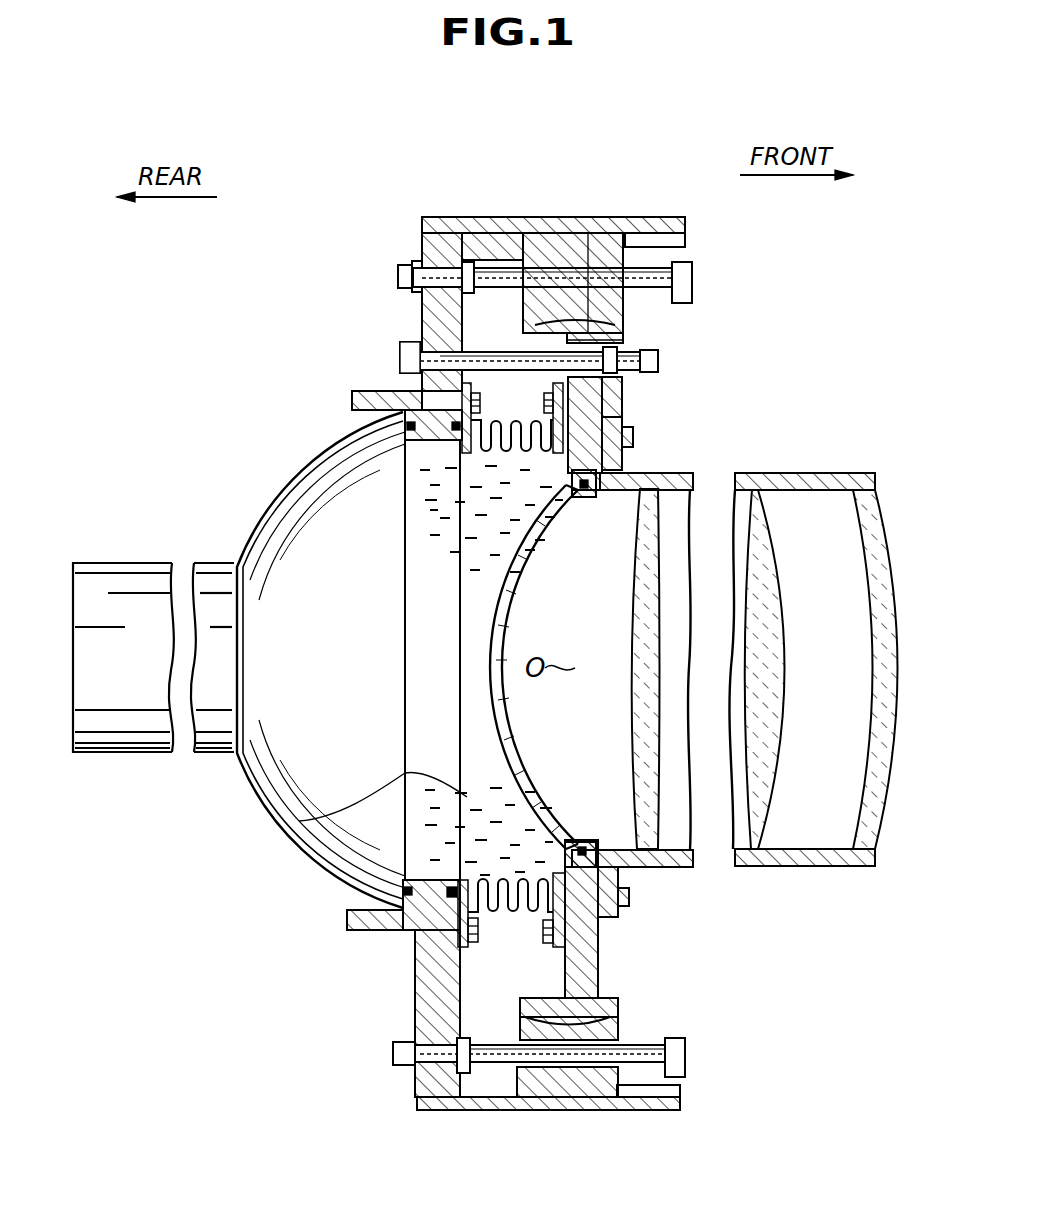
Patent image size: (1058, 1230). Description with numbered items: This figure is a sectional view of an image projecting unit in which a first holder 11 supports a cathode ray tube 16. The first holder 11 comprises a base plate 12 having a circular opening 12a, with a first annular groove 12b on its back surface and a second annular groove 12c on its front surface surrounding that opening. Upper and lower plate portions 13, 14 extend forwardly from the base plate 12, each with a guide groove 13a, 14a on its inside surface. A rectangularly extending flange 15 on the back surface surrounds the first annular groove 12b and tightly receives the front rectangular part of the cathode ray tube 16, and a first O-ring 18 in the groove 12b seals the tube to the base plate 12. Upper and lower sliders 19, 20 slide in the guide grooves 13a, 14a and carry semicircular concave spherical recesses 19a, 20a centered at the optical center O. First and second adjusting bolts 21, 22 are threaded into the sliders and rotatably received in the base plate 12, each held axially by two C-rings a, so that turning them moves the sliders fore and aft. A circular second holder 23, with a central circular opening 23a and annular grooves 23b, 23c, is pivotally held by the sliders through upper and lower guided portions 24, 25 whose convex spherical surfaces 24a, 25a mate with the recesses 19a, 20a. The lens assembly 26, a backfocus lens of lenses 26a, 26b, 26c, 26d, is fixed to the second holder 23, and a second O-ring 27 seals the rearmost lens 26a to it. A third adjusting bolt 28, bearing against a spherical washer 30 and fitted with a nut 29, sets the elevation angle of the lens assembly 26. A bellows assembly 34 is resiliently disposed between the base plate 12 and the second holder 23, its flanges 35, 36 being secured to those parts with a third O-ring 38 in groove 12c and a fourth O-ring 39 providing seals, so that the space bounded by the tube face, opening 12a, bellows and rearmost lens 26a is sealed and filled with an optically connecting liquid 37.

The first holder 11 is at (402, 225).
The base plate 12 is at (430, 310).
The circular opening 12a is at (330, 863).
The first annular groove 12b is at (338, 450).
The second annular groove 12c is at (372, 427).
The upper plate portion 13 is at (613, 220).
The guide groove 13a is at (685, 238).
The lower plate portion 14 is at (667, 1113).
The guide groove 14a is at (680, 1093).
The rectangularly extending flange 15 is at (352, 395).
The cathode ray tube 16 is at (297, 491).
The first O-ring 18 is at (363, 897).
The upper slider 19 is at (625, 303).
The semicircular concave spherical recess 19a is at (625, 352).
The lower slider 20 is at (617, 1030).
The semicircular concave spherical recess 20a is at (620, 1007).
The first adjusting bolt 21 is at (692, 278).
The second adjusting bolt 22 is at (685, 1057).
The second holder 23 is at (566, 240).
The circular opening 23a is at (585, 497).
The annular groove 23b is at (570, 483).
The annular groove 23c is at (625, 460).
The upper guided portion 24 is at (510, 240).
The convex spherical surface 24a is at (625, 330).
The lower guided portion 25 is at (610, 987).
The convex spherical surface 25a is at (520, 1030).
The lens assembly 26 is at (822, 460).
The rearmost lens 26a is at (510, 617).
The lens 26b is at (630, 713).
The lens 26c is at (793, 480).
The lens 26d is at (902, 480).
The second O-ring 27 is at (613, 870).
The third adjusting bolt 28 is at (663, 363).
The nut 29 is at (625, 378).
The spherical washer 30 is at (423, 342).
The bellows assembly 34 is at (478, 450).
The annular mounting flange 35 is at (427, 370).
The annular mounting flange 36 is at (625, 407).
The optically connecting liquid 37 is at (299, 821).
The third O-ring 38 is at (447, 897).
The fourth O-ring 39 is at (597, 927).
The C-ring a is at (473, 220).